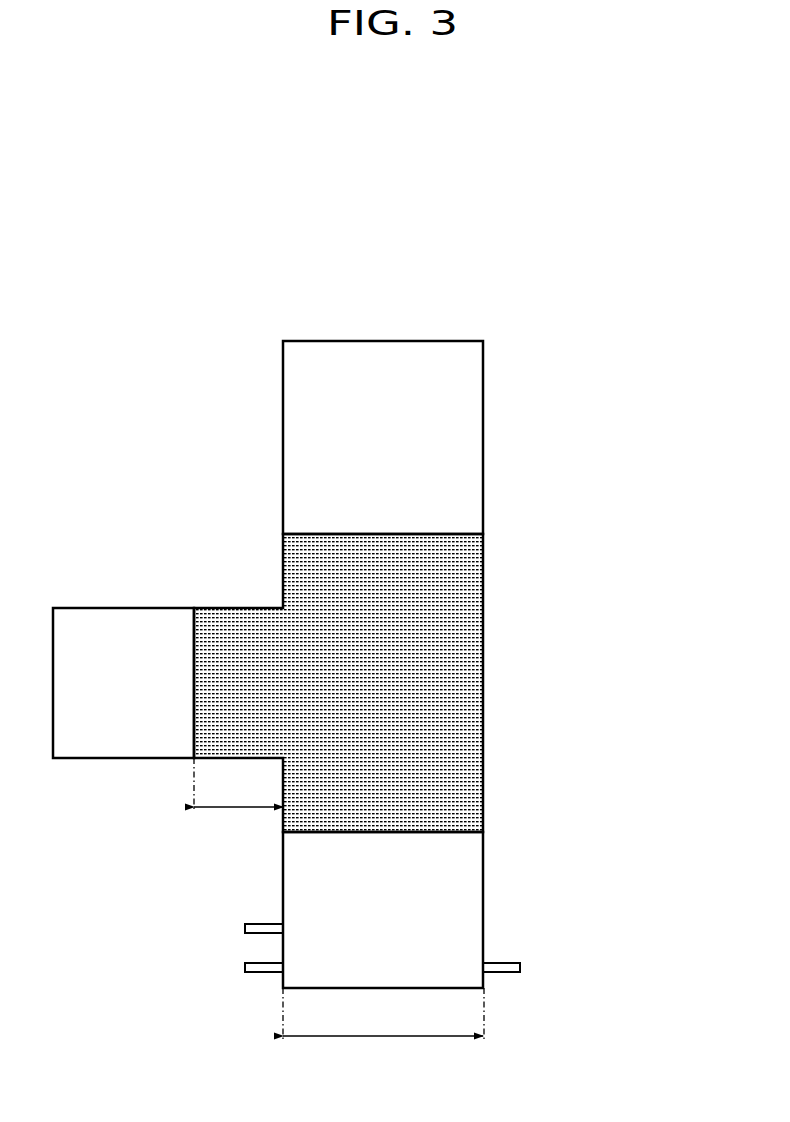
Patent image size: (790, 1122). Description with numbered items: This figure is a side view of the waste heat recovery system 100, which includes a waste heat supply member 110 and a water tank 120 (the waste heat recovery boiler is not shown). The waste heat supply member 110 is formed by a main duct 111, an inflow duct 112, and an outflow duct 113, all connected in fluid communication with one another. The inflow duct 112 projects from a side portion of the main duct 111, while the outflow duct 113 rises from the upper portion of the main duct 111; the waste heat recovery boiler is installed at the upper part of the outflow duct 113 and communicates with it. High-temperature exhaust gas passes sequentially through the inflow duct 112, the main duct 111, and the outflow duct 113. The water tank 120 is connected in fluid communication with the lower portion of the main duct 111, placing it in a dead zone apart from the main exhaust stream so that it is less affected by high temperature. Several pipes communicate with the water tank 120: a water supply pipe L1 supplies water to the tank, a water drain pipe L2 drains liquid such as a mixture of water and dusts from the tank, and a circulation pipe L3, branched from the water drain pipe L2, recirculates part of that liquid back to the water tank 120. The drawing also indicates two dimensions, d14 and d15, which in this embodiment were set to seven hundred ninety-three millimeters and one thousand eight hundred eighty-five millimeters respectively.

The waste heat recovery system 100 is at (374, 664).
The waste heat supply member 110 is at (341, 586).
The main duct 111 is at (400, 680).
The inflow duct 112 is at (122, 675).
The outflow duct 113 is at (400, 436).
The water tank 120 is at (403, 910).
The water supply pipe L1 is at (253, 929).
The water drain pipe L2 is at (520, 967).
The circulation pipe L3 is at (253, 967).
The dimension d14 is at (238, 797).
The dimension d15 is at (383, 1028).